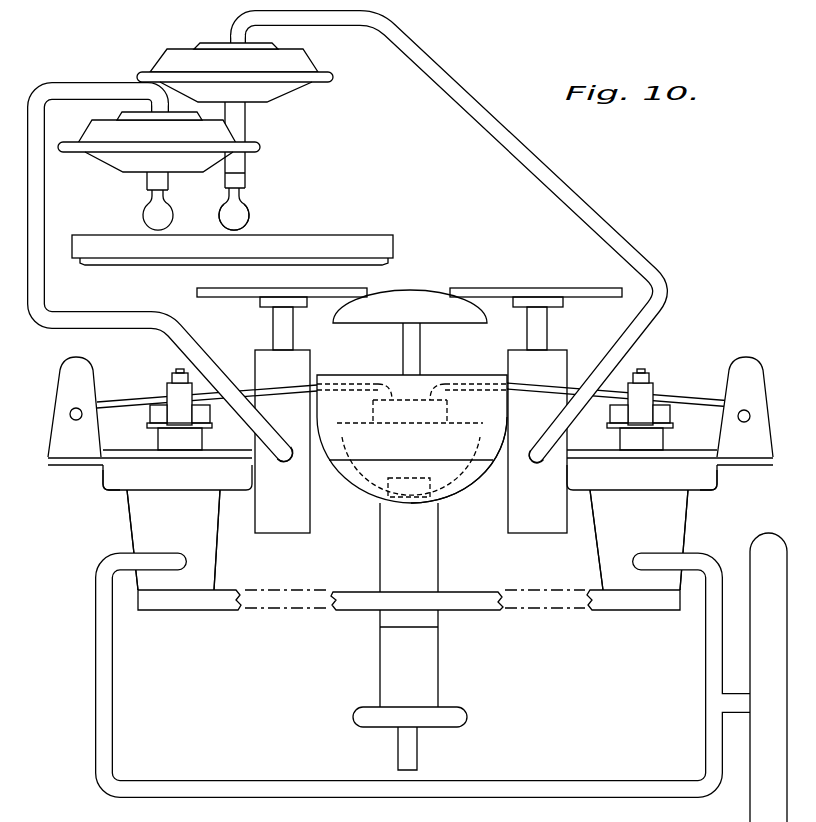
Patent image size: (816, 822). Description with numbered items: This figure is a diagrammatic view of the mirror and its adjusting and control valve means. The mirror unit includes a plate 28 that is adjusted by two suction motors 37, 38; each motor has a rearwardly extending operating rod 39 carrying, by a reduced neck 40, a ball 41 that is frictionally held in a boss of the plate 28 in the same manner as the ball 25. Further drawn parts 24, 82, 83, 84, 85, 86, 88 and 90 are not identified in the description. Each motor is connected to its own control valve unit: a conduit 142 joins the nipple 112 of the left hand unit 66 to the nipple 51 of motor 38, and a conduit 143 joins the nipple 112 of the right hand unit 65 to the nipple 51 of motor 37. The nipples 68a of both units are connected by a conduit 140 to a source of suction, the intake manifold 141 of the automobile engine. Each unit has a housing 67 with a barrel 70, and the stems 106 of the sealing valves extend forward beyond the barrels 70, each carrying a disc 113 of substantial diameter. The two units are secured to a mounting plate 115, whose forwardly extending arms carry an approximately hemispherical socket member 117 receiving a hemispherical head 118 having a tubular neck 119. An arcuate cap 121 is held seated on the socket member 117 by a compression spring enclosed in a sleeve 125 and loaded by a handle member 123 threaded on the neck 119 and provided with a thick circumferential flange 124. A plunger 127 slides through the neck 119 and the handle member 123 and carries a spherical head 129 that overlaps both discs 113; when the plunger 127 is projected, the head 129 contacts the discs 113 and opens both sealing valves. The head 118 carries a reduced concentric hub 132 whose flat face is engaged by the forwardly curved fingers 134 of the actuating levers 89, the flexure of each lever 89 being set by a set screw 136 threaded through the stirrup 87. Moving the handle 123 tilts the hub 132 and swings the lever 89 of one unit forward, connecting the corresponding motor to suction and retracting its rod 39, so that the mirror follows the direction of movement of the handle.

The nipple 51 is at (231, 38).
The suction motor 37 is at (296, 62).
The suction motor 38 is at (115, 160).
The operating rod 39 is at (244, 119).
The reduced neck 40 is at (150, 197).
The ball 41 is at (146, 218).
The collar 24 is at (243, 200).
The ball 25 is at (246, 217).
The plate 28 is at (334, 248).
The conduit 143 is at (622, 181).
The spherical head 129 is at (418, 294).
The disc 113 is at (204, 288).
The stem 106 is at (279, 321).
The plunger 127 is at (406, 337).
The forwardly curved finger 134 is at (408, 372).
The conduit 142 is at (130, 297).
The set screw 136 is at (175, 371).
The actuating lever 89 is at (117, 400).
The stirrup 87 is at (166, 392).
The hole 90 is at (70, 412).
The lug 82 is at (57, 421).
The block 86 is at (150, 412).
The block 85 is at (168, 437).
The block 88 is at (207, 420).
The nipple 112 is at (289, 446).
The hub 132 is at (374, 406).
The socket member 117 is at (505, 432).
The hemispherical head 118 is at (345, 437).
The hook 83 is at (99, 486).
The block 84 is at (197, 474).
The control valve unit 66 is at (118, 528).
The housing 67 is at (137, 533).
The barrel 70 is at (303, 494).
The arcuate cap 121 is at (489, 479).
The tubular neck 119 is at (368, 498).
The nipple 68a is at (188, 561).
The sleeve 125 is at (421, 572).
The control valve unit 65 is at (733, 525).
The mounting plate 115 is at (230, 612).
The handle member 123 is at (421, 661).
The circumferential flange 124 is at (458, 712).
The intake manifold 141 is at (762, 637).
The conduit 140 is at (585, 760).